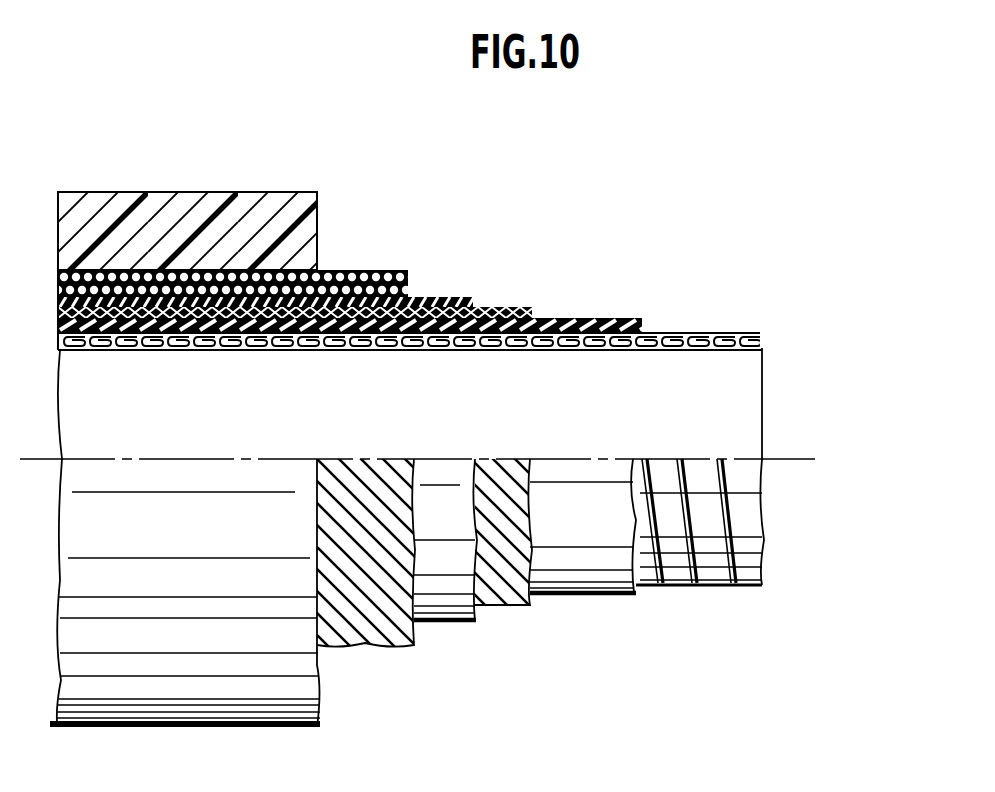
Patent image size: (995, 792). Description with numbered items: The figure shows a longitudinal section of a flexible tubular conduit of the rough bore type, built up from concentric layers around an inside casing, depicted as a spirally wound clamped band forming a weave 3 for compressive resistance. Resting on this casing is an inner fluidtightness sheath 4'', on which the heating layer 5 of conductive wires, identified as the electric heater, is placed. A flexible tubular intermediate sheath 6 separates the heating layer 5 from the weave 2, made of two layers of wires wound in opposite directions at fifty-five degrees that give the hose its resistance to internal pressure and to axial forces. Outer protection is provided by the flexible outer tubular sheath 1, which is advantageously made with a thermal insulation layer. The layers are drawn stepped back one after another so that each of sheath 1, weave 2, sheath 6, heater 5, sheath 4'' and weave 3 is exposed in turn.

The flexible outer tubular sheath 1 is at (281, 207).
The weave for tensile strength 2 is at (380, 270).
The flexible tubular intermediate sheath 6 is at (448, 297).
The heating layer 5 is at (498, 308).
The inner fluidtightness sheath 4'' is at (361, 291).
The weave for compressive resistance 3 is at (716, 330).